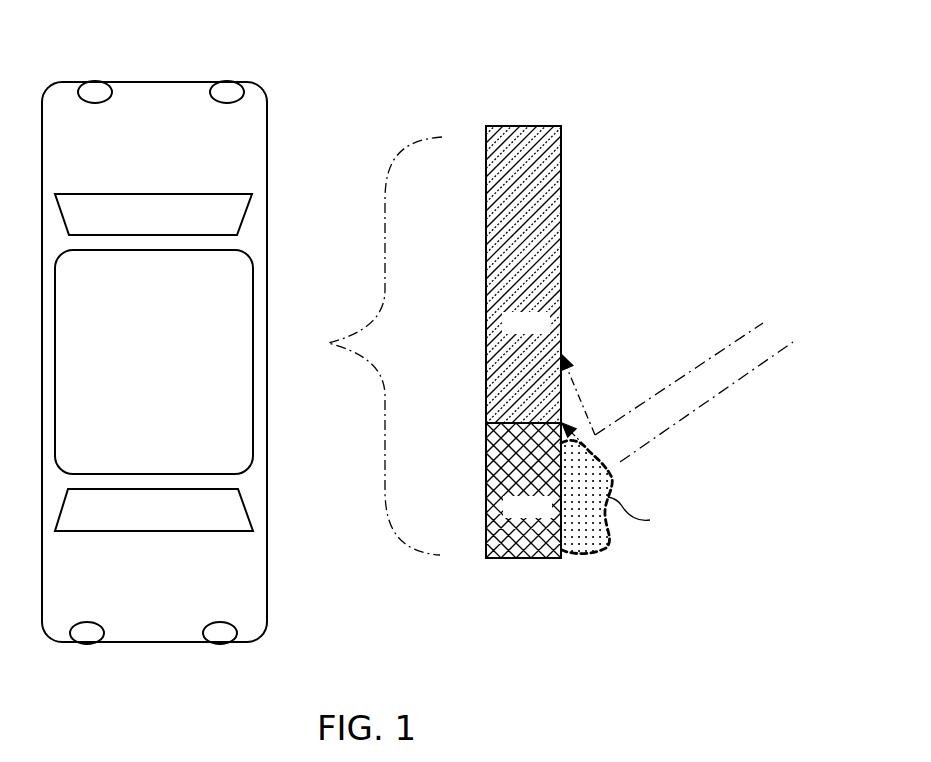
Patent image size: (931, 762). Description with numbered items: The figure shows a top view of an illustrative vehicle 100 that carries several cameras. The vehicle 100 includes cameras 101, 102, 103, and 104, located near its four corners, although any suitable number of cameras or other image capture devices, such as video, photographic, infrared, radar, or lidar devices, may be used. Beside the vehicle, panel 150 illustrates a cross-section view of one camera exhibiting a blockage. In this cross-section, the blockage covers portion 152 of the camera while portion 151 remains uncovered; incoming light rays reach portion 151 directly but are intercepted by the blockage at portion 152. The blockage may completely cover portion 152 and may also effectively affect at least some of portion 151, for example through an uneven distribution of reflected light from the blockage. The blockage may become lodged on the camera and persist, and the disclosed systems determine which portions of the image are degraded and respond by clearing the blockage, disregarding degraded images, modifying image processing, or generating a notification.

The vehicle 100 is at (175, 372).
The camera 101 is at (93, 90).
The camera 102 is at (229, 90).
The camera 103 is at (85, 633).
The camera 104 is at (220, 633).
The panel 150 is at (520, 304).
The portion 151 is at (547, 331).
The portion 152 is at (549, 516).